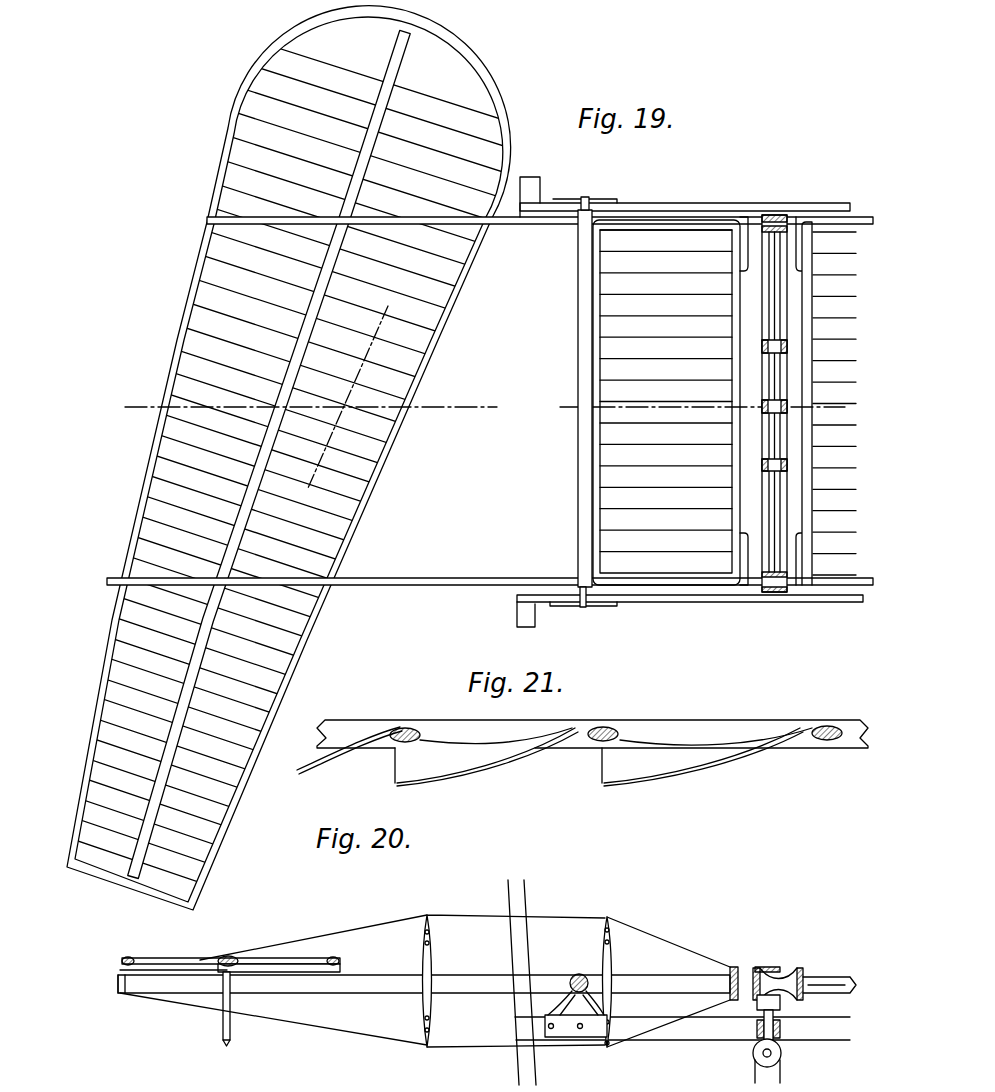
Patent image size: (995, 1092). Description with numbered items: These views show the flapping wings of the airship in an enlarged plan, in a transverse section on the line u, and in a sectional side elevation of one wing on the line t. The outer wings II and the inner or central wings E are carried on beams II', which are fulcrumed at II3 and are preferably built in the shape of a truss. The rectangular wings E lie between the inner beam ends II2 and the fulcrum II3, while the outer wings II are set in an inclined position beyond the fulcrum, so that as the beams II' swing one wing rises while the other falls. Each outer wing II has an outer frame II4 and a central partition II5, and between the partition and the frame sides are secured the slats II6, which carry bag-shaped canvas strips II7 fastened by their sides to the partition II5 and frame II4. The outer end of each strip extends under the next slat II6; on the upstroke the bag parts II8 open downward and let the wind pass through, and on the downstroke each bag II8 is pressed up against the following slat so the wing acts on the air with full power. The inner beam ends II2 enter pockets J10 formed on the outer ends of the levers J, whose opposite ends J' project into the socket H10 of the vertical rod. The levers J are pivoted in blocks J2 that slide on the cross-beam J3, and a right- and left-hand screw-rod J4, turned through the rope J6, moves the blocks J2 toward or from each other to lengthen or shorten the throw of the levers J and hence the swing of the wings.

In FIG. 19, the outer wings II is at (285, 497).
In FIG. 20, the outer wings II is at (230, 948).
In FIG. 19, the beams II' is at (490, 415).
In FIG. 20, the beams II' is at (489, 971).
In FIG. 20, the ends of the beams II2 is at (757, 975).
In FIG. 19, the fulcrum II3 is at (578, 561).
In FIG. 20, the fulcrum II3 is at (588, 956).
In FIG. 19, the outer frame II4 is at (372, 541).
In FIG. 21, the outer frame II4 is at (592, 735).
In FIG. 20, the outer frame II4 is at (130, 958).
In FIG. 19, the central partition II5 is at (262, 475).
In FIG. 20, the central partition II5 is at (228, 957).
In FIG. 21, the slats II6 is at (422, 717).
In FIG. 21, the canvas strips II7 is at (722, 746).
In FIG. 21, the bag parts II8 is at (676, 772).
In FIG. 20, the bag parts II8 is at (298, 972).
In FIG. 19, the levers J is at (741, 403).
In FIG. 19, the ends of the levers J' is at (806, 402).
In FIG. 19, the blocks J2 is at (762, 466).
In FIG. 20, the blocks J2 is at (758, 1026).
In FIG. 19, the cross-beam J3 is at (762, 347).
In FIG. 20, the cross-beam J3 is at (757, 1031).
In FIG. 20, the screw-rod J4 is at (760, 1062).
In FIG. 20, the rope J6 is at (782, 1056).
In FIG. 19, the pocket J10 is at (780, 612).
In FIG. 20, the pocket J10 is at (770, 968).
In FIG. 19, the socket H10 is at (765, 407).
In FIG. 19, the inner or central wings E is at (638, 473).
In FIG. 20, the inner or central wings E is at (668, 971).
In FIG. 19, the section line t t is at (345, 397).
In FIG. 19, the section line u u is at (480, 397).